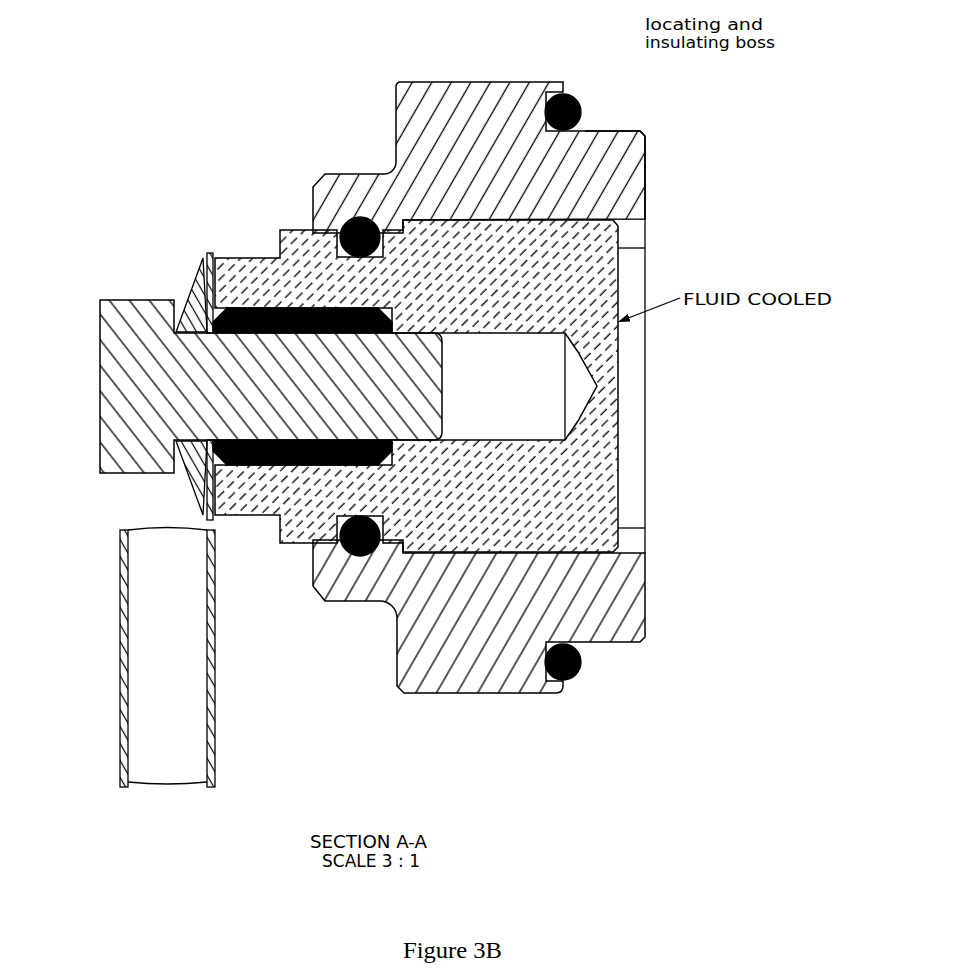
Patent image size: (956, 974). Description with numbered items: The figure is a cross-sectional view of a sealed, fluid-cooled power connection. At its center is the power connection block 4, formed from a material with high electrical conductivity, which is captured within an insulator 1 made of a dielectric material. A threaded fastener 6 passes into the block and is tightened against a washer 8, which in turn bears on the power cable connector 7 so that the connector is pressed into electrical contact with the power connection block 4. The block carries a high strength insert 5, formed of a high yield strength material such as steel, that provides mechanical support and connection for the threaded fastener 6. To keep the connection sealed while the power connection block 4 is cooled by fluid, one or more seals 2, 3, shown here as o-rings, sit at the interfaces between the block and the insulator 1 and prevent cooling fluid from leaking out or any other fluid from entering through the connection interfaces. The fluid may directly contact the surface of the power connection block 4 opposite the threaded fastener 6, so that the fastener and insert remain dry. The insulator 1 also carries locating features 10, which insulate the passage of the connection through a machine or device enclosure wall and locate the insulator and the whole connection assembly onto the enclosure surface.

The insulator 1 is at (429, 695).
The seal 2 is at (340, 560).
The seal 3 is at (580, 675).
The power connection block 4 is at (618, 500).
The high strength insert 5 is at (272, 308).
The threaded fastener 6 is at (135, 297).
The power cable connector 7 is at (220, 763).
The washer 8 is at (187, 290).
The locating features 10 is at (625, 128).